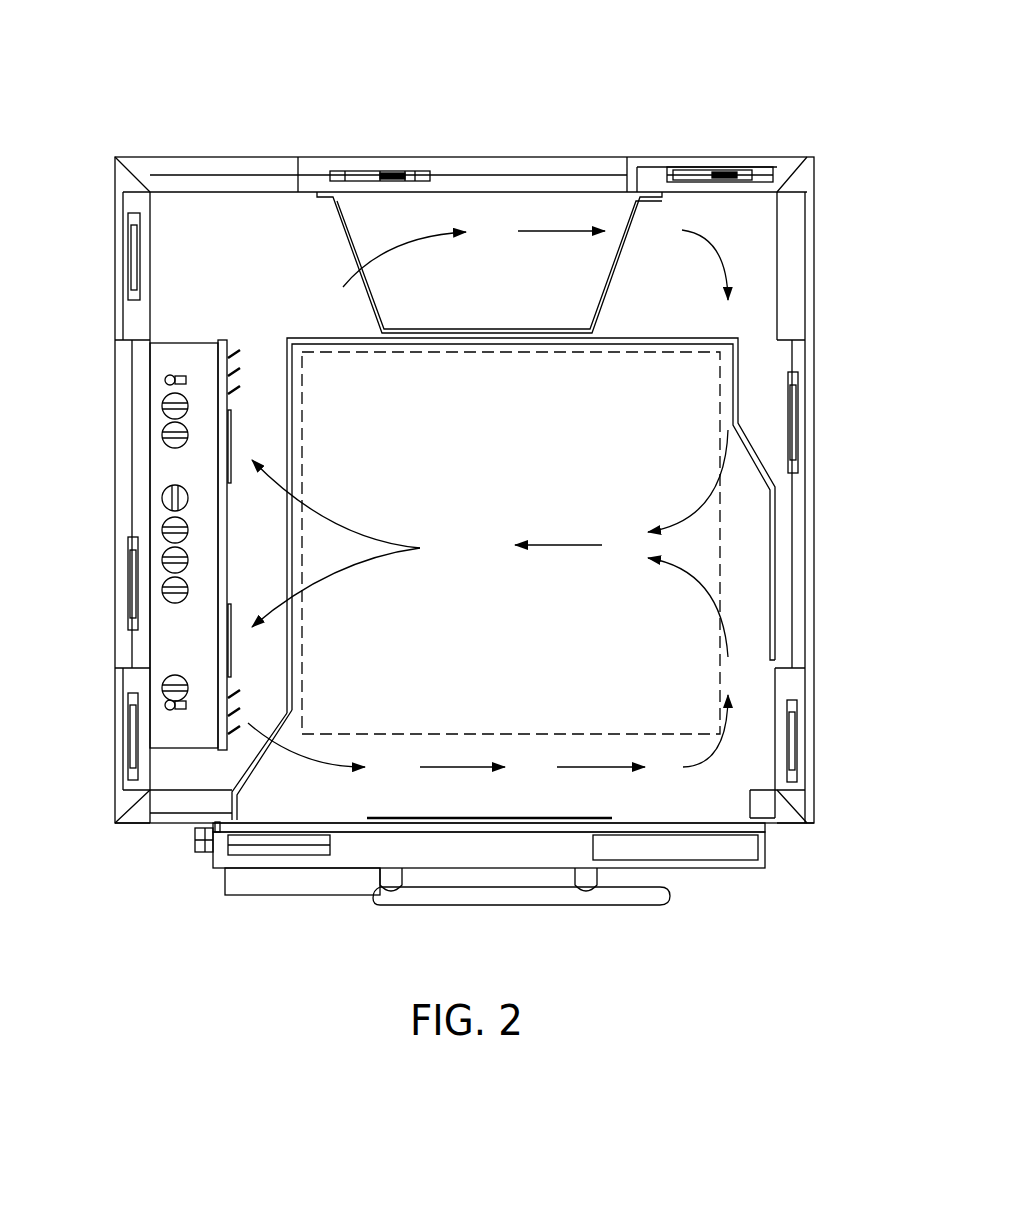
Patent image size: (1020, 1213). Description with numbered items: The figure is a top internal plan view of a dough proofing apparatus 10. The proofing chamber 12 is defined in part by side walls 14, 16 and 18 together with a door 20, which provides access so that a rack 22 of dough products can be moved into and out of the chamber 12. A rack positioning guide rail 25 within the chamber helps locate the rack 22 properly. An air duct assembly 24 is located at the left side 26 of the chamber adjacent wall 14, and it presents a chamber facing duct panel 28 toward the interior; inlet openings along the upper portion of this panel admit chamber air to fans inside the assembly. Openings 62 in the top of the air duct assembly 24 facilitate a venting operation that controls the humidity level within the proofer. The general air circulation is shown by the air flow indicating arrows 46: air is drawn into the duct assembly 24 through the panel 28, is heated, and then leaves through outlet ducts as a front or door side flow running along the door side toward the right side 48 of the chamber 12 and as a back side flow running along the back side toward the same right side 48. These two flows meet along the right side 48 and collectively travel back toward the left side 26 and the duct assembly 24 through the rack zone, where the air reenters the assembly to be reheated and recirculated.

The dough proofing apparatus 10 is at (716, 112).
The proofing chamber 12 is at (527, 594).
The side wall 14 is at (112, 258).
The side wall 16 is at (495, 157).
The side wall 18 is at (815, 407).
The door 20 is at (712, 868).
The rack 22 is at (645, 352).
The air duct assembly 24 is at (180, 336).
The rack positioning guide rail 25 is at (284, 640).
The side of the chamber 26 is at (135, 836).
The chamber facing duct panel 28 is at (220, 540).
The air flow indicating arrows 46 is at (530, 231).
The right side of the chamber 48 is at (803, 838).
The openings 62 is at (153, 417).